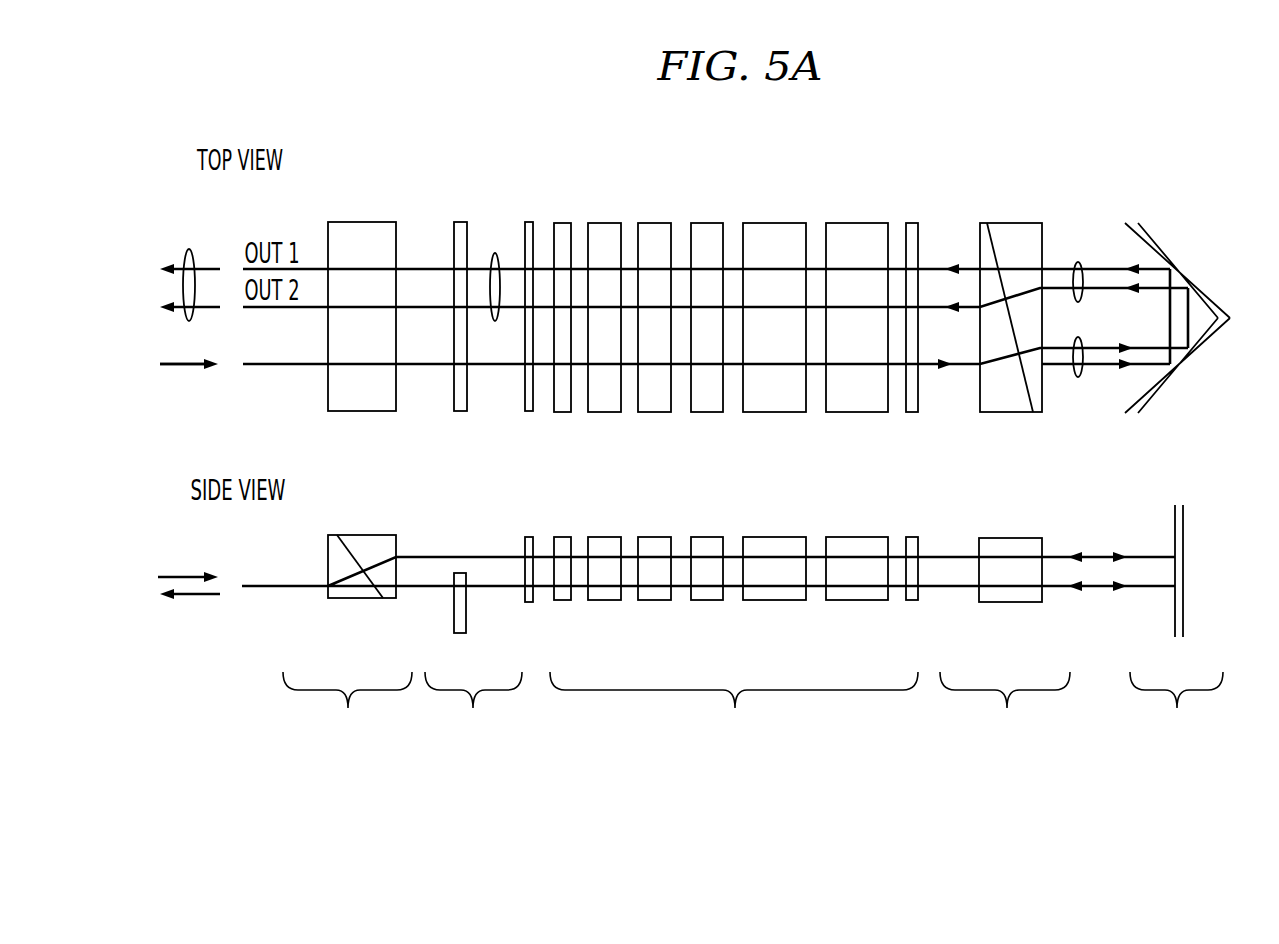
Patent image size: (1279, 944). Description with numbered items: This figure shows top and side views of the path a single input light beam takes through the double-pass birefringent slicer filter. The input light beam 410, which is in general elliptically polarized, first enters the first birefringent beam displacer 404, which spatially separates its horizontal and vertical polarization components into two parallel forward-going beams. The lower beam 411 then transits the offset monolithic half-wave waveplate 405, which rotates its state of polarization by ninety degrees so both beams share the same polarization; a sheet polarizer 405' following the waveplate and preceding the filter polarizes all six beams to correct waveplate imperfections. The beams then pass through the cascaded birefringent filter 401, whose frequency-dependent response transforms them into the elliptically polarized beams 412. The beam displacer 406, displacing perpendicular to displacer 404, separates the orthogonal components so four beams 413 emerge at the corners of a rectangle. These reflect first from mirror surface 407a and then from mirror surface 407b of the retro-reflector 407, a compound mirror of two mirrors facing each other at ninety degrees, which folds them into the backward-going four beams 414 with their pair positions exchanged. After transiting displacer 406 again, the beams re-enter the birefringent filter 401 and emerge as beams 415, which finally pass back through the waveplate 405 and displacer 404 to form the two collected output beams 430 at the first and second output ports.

The birefringent filter 401 is at (734, 497).
The first birefringent beam displacer 404 is at (347, 513).
The monolithic λ/2 waveplate 405 is at (479, 513).
The sheet polarizer 405' is at (535, 441).
The beam displacer 406 is at (1005, 514).
The retro-reflector 407 is at (1193, 514).
The mirror surface 407a is at (1187, 367).
The mirror surface 407b is at (1187, 268).
The input light beam 410 is at (182, 366).
The lower beam 411 is at (423, 588).
The beams 412 is at (950, 368).
The four beams 413 is at (1078, 378).
The four beams 414 is at (1078, 261).
The emergent beams 415 is at (495, 252).
The collected output beams 430 is at (189, 249).